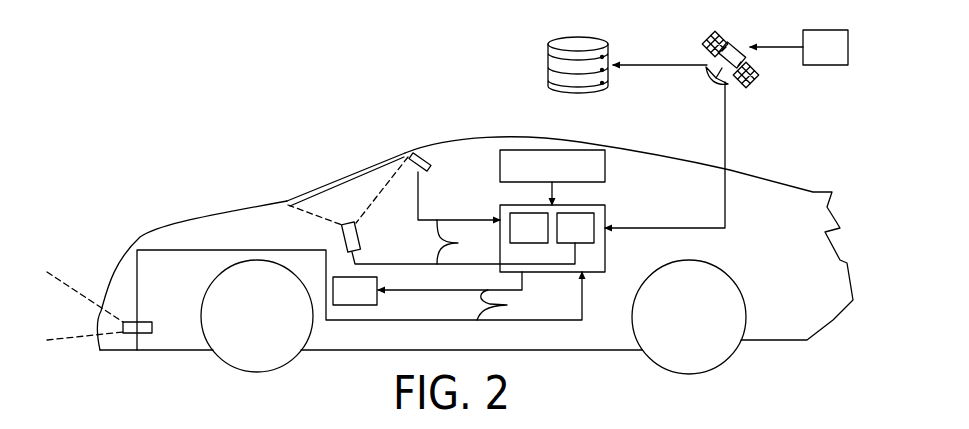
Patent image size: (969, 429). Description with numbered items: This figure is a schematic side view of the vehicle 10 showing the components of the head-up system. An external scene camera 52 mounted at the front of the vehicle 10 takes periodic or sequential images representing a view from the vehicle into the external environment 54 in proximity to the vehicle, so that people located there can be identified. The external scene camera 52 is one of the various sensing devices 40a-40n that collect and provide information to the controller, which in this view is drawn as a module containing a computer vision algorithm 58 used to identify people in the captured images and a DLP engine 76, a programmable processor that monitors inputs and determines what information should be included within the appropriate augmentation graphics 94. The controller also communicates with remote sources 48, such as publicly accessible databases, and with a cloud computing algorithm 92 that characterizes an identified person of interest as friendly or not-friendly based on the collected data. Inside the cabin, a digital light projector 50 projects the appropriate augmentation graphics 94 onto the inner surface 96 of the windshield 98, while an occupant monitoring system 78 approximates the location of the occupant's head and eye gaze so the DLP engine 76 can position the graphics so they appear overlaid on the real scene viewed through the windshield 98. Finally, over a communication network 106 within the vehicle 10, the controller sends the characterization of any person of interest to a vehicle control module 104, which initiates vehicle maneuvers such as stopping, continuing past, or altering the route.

The vehicle 10 is at (662, 153).
The sensing devices 40a-40n is at (590, 176).
The remote sources 48 is at (838, 60).
The digital light projector 50 is at (360, 237).
The external scene camera 52 is at (137, 334).
The external environment 54 is at (77, 323).
The computer vision algorithm 58 is at (543, 241).
The DLP engine 76 is at (588, 241).
The occupant monitoring system 78 is at (431, 162).
The cloud computing algorithm 92 is at (547, 65).
The augmentation graphics 94 is at (375, 197).
The inner surface 96 is at (320, 197).
The windshield 98 is at (349, 165).
The vehicle control module 104 is at (373, 303).
The communication network 106 is at (489, 270).